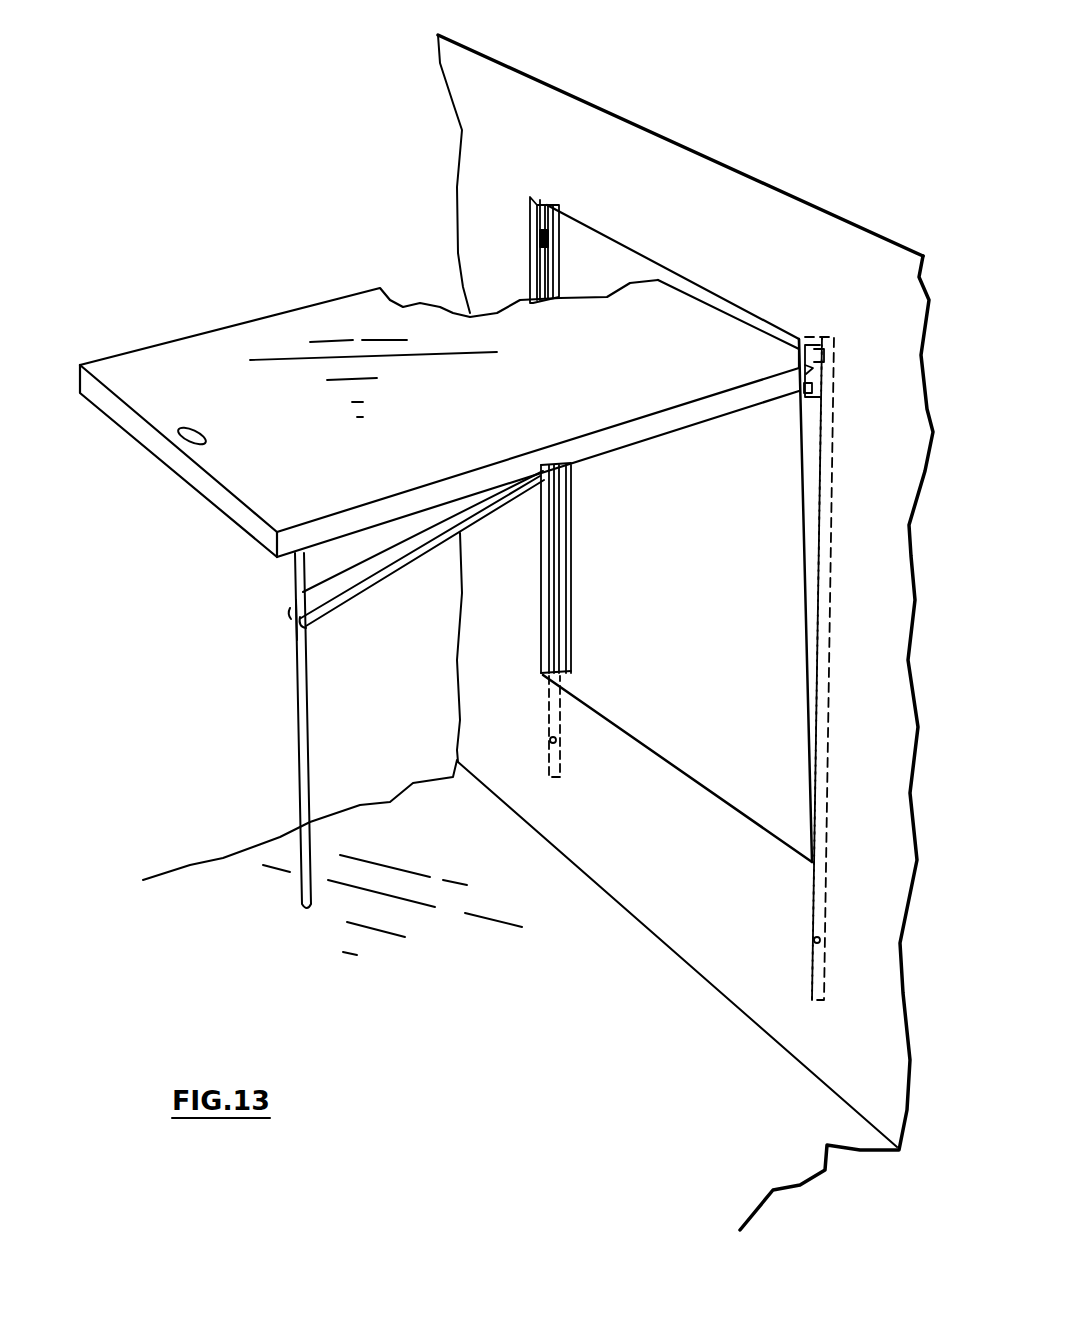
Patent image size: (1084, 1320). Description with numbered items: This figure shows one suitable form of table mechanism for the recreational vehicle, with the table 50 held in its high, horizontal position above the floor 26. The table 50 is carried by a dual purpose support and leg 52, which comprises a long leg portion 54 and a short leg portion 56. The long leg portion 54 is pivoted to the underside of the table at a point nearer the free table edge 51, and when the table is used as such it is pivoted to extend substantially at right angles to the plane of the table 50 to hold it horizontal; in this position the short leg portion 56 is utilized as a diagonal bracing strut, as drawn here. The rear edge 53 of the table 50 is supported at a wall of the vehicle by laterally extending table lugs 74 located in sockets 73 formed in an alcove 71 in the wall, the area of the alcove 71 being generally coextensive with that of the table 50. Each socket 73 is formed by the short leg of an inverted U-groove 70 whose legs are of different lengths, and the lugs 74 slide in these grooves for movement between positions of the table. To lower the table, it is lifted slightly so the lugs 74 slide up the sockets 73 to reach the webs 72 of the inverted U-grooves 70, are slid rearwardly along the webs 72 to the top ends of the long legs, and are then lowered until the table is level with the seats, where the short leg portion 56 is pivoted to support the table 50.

The floor 26 is at (478, 978).
The table 50 is at (257, 347).
The free table edge 51 is at (132, 422).
The dual purpose support and leg 52 is at (297, 772).
The long leg portion 54 is at (290, 668).
The short leg portion 56 is at (380, 576).
The rear edge 53 is at (683, 287).
The inverted U-groove 70 is at (557, 510).
The alcove 71 is at (720, 690).
The web 72 is at (540, 205).
The socket 73 is at (540, 232).
The table lug 74 is at (808, 371).